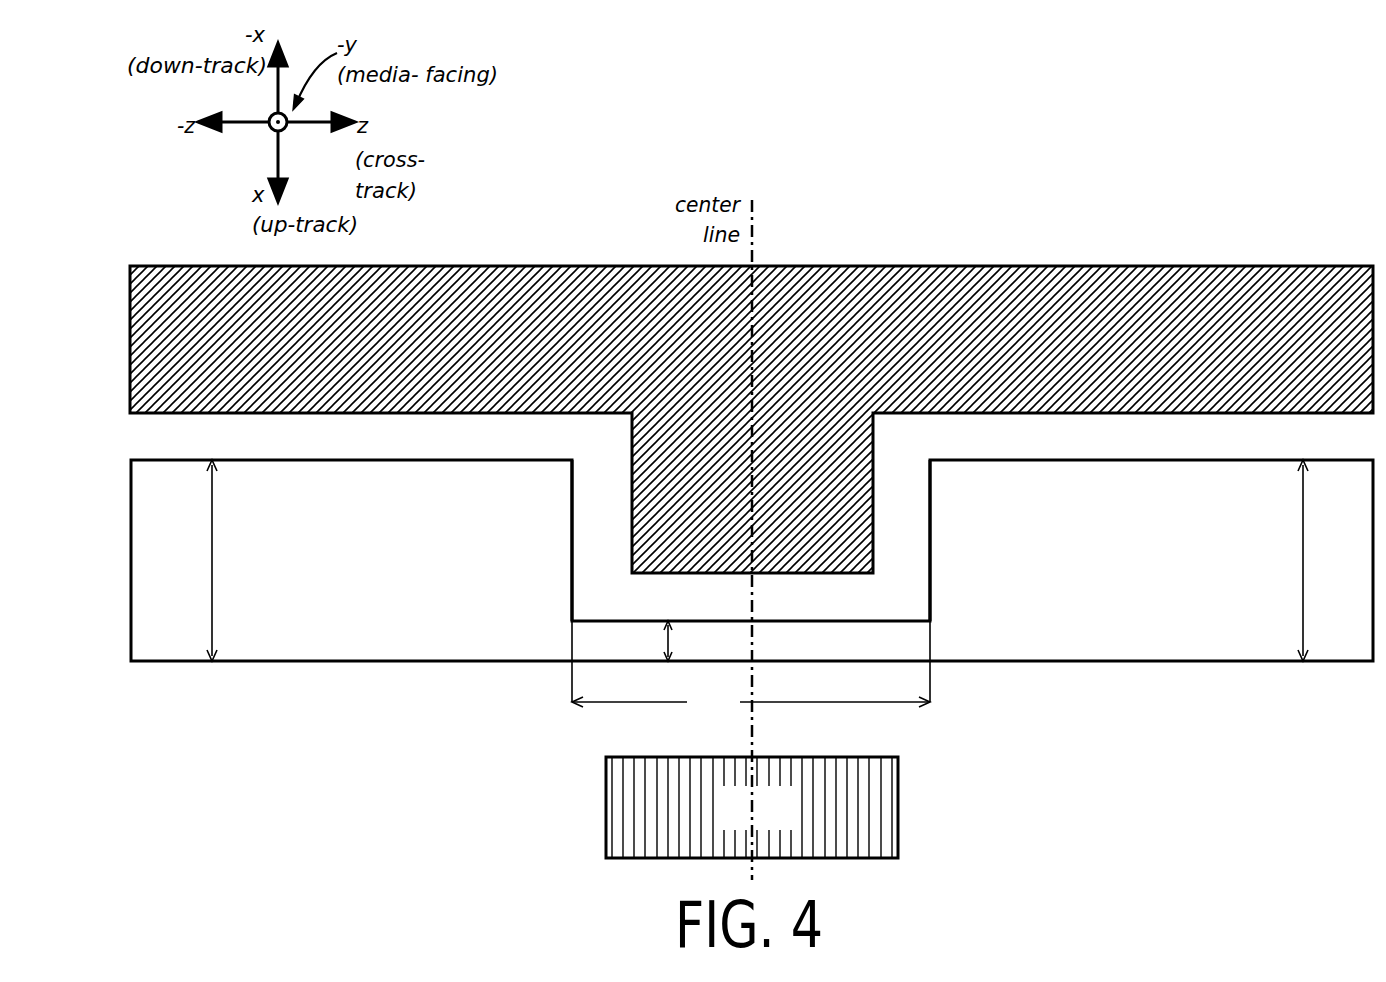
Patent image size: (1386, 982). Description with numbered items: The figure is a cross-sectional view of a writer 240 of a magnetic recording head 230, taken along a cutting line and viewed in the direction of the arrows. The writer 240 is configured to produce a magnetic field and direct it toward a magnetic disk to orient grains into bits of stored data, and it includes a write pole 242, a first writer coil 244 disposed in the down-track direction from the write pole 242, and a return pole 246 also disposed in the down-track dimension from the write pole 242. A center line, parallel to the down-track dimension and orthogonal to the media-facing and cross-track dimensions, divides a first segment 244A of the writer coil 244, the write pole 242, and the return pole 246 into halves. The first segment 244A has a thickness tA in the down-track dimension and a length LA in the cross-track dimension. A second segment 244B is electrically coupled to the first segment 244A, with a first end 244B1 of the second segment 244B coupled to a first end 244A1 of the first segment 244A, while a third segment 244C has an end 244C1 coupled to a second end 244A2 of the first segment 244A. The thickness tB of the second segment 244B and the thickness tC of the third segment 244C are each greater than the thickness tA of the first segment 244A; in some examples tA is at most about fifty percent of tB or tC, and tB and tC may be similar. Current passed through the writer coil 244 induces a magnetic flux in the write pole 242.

The magnetic recording head 230 is at (952, 148).
The return pole 246 is at (775, 362).
The first writer coil 244 is at (1260, 692).
The first segment 244A is at (784, 655).
The second segment 244B is at (383, 575).
The third segment 244C is at (1198, 575).
The first end of first segment 244A1 is at (607, 647).
The second end of first segment 244A2 is at (900, 643).
The first end of second segment 244B1 is at (527, 633).
The end of third segment 244C1 is at (990, 633).
The writer 240 is at (1058, 825).
The write pole 242 is at (775, 818).